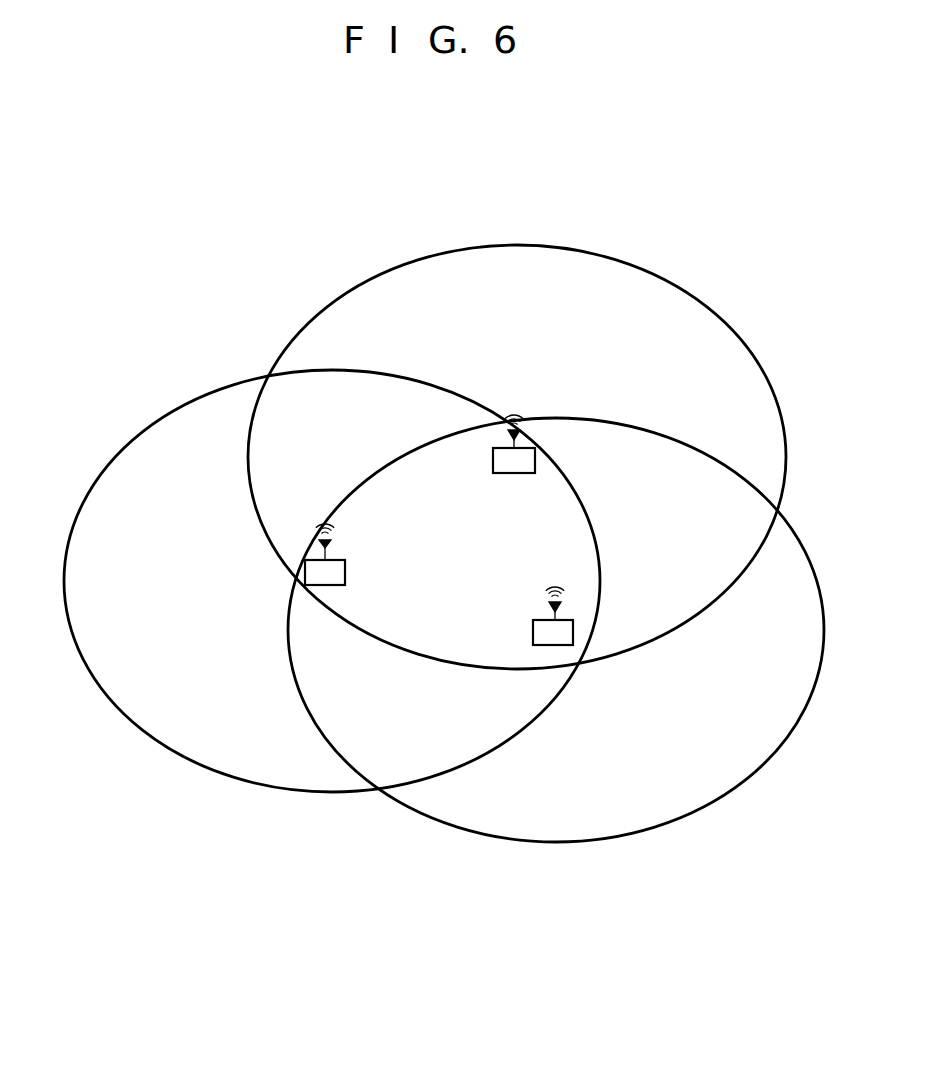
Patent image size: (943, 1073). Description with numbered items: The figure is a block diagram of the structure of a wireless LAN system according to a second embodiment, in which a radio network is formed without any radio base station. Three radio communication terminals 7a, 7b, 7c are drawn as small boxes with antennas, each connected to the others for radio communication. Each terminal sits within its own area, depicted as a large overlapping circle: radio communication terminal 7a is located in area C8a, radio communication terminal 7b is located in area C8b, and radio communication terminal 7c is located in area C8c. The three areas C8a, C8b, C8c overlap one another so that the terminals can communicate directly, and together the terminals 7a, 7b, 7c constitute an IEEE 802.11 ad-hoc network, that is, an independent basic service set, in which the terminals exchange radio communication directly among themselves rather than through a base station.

The area C8a is at (162, 748).
The area C8b is at (700, 300).
The area C8c is at (553, 843).
The radio communication terminal 7a is at (322, 585).
The radio communication terminal 7b is at (512, 473).
The radio communication terminal 7c is at (550, 645).